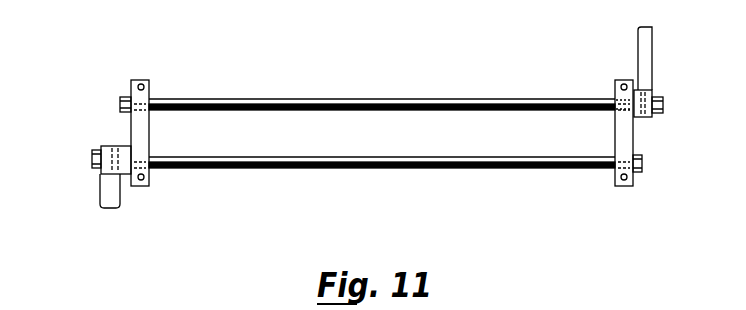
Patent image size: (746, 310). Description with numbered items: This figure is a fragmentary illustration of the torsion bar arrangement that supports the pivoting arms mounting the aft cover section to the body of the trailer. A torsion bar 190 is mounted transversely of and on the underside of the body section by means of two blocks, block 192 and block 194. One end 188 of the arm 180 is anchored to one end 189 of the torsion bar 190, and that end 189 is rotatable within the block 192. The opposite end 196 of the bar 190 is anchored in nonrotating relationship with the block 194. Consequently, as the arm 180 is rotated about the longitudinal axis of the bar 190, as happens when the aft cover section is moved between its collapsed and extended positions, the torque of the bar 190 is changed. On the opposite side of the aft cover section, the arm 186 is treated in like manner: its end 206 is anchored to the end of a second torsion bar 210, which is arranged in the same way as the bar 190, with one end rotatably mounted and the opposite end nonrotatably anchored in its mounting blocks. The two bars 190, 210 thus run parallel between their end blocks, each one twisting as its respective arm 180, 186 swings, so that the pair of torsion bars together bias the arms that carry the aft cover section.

The arm 180 is at (651, 28).
The arm 186 is at (107, 210).
The end of the arm 188 is at (647, 88).
The end of the torsion bar 189 is at (613, 100).
The torsion bar 190 is at (335, 98).
The block 192 is at (623, 130).
The block 194 is at (140, 125).
The end of the torsion bar 196 is at (137, 102).
The end of the arm 206 is at (103, 179).
The torsion bar 210 is at (340, 157).